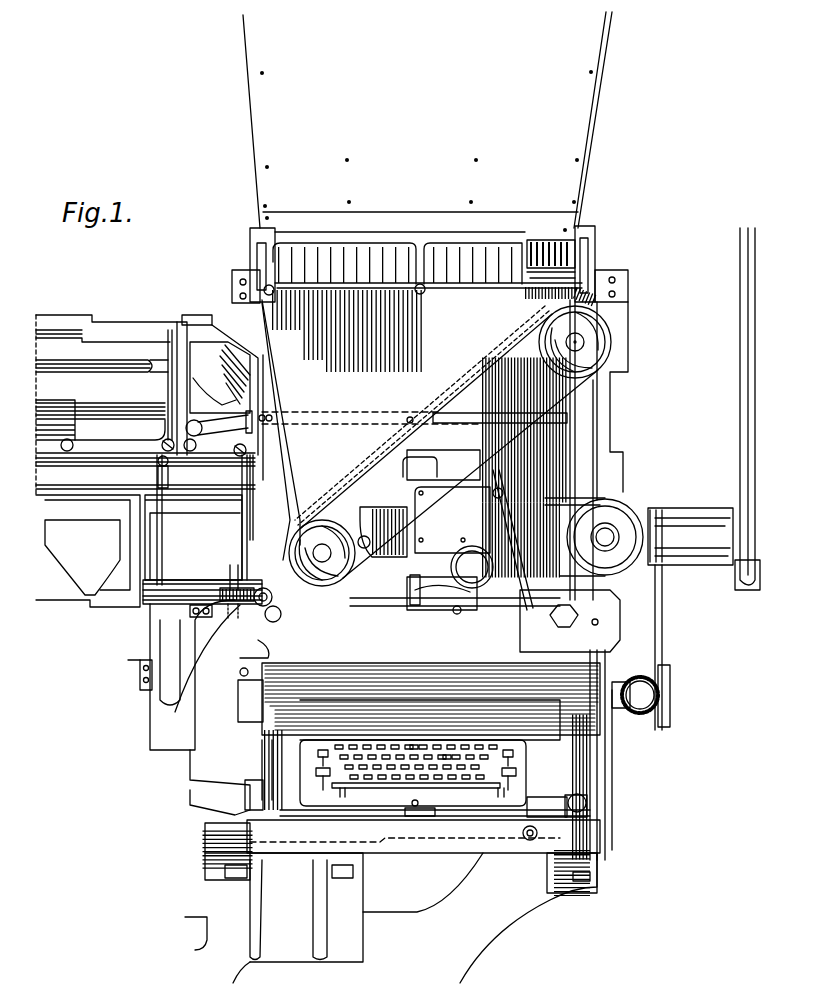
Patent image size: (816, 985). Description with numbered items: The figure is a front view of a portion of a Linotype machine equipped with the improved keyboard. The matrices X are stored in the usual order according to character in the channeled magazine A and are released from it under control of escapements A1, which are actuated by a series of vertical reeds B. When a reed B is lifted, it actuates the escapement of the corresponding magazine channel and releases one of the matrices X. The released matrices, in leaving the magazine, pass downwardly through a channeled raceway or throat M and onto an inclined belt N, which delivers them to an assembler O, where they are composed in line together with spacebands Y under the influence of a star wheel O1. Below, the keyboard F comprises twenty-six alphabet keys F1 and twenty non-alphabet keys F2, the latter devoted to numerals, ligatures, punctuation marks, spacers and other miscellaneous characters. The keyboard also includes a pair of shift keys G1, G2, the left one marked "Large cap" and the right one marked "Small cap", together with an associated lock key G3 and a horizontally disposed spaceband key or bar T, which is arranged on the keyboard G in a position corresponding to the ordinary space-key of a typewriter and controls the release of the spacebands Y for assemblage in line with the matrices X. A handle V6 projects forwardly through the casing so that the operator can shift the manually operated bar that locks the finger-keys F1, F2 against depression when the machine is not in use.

The channeled magazine A is at (427, 122).
The escapements A1 is at (545, 288).
The channeled raceway or throat M is at (464, 270).
The matrices X is at (582, 222).
The spacebands Y is at (248, 395).
The inclined belt N is at (432, 412).
The vertical reeds B is at (560, 478).
The assembler O is at (160, 610).
The star wheel O1 is at (277, 431).
The keyboard F is at (505, 748).
The alphabet keys F1 is at (448, 756).
The non-alphabet keys F2 is at (412, 747).
The keyboard G is at (518, 754).
The shift key G1 is at (316, 774).
The shift key G2 is at (518, 774).
The lock key G3 is at (316, 754).
The spaceband key or bar T is at (408, 790).
The handle V6 is at (416, 816).